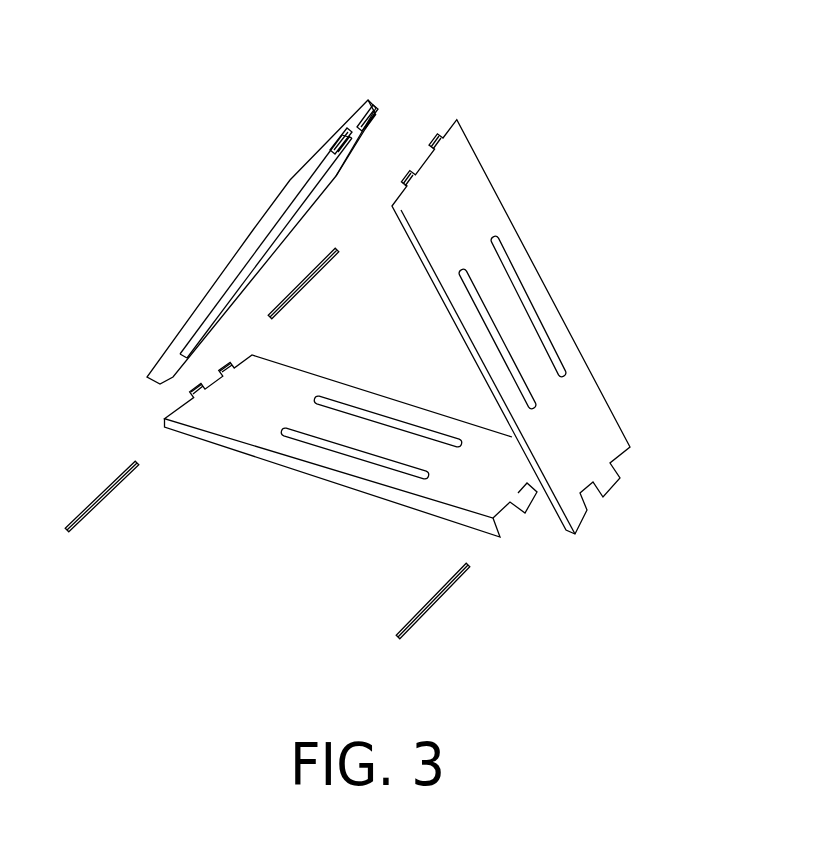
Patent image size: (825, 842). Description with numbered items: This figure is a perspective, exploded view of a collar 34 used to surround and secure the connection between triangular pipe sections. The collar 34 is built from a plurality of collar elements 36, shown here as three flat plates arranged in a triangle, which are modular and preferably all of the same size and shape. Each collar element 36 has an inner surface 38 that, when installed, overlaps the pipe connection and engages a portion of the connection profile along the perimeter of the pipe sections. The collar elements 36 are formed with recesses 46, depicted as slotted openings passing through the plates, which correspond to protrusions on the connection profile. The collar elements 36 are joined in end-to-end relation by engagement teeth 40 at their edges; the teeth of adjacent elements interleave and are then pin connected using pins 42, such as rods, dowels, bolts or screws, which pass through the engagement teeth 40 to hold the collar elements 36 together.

The collar 34 is at (703, 257).
The collar element 36 is at (242, 243).
The inner surface 38 is at (198, 318).
The engagement teeth 40 is at (454, 123).
The pin 42 is at (324, 270).
The recess 46 is at (507, 333).